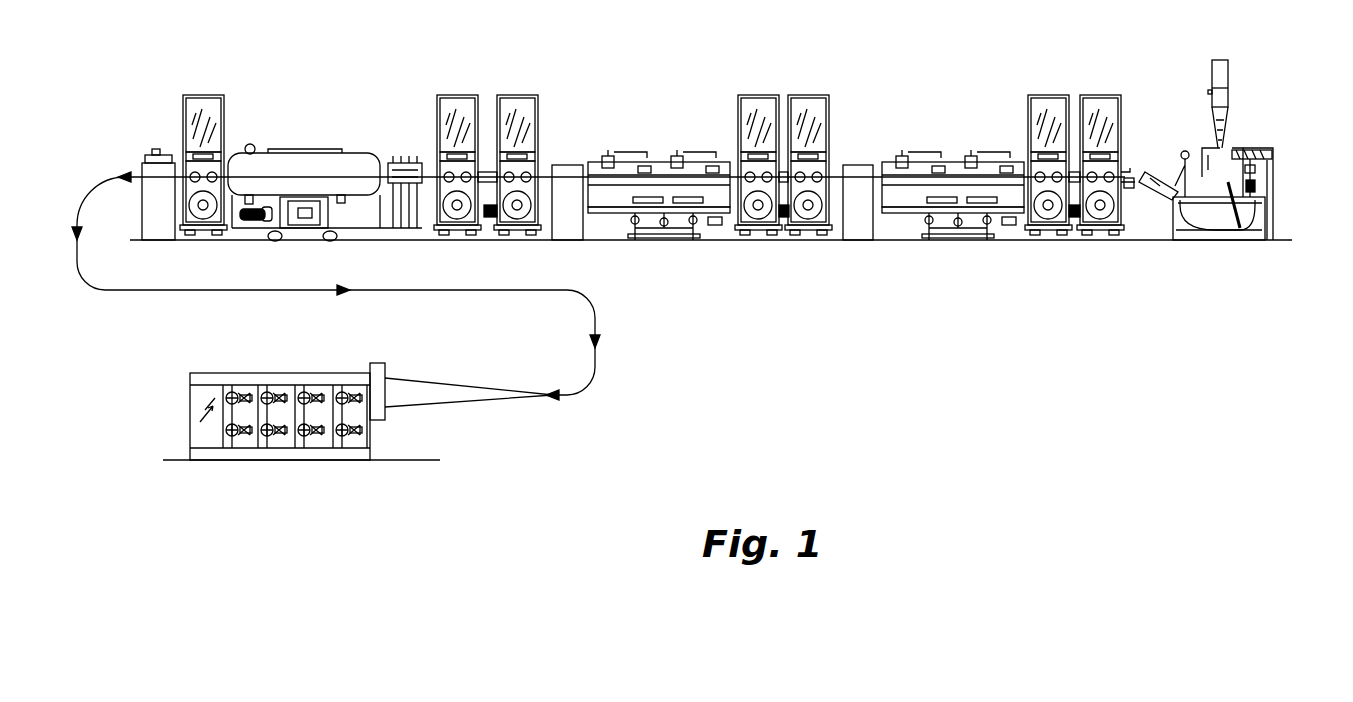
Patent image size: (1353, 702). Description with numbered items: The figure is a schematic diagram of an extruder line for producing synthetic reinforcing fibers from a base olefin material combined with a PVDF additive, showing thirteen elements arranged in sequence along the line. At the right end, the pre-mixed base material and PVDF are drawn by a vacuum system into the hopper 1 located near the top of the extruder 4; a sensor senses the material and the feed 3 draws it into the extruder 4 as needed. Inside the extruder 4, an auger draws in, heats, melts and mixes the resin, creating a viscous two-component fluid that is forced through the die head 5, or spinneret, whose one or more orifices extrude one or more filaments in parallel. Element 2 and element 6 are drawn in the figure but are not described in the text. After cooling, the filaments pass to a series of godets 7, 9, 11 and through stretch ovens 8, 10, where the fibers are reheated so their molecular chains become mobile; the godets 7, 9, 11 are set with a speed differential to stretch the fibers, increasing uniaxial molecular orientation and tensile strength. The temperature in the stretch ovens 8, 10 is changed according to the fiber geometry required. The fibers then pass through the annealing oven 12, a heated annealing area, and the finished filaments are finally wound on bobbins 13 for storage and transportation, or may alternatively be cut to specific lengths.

The hopper 1 is at (1232, 85).
The feed nozzle 2 is at (1215, 120).
The feed 3 is at (1240, 150).
The extruder 4 is at (1265, 157).
The die head 5 is at (1257, 190).
The basin / bath 6 is at (1217, 232).
The godet 7 is at (1074, 188).
The stretch oven 8 is at (953, 216).
The godet 9 is at (783, 188).
The stretch oven 10 is at (659, 216).
The godet 11 is at (487, 188).
The annealing oven 12 is at (282, 186).
The bobbins 13 is at (301, 396).